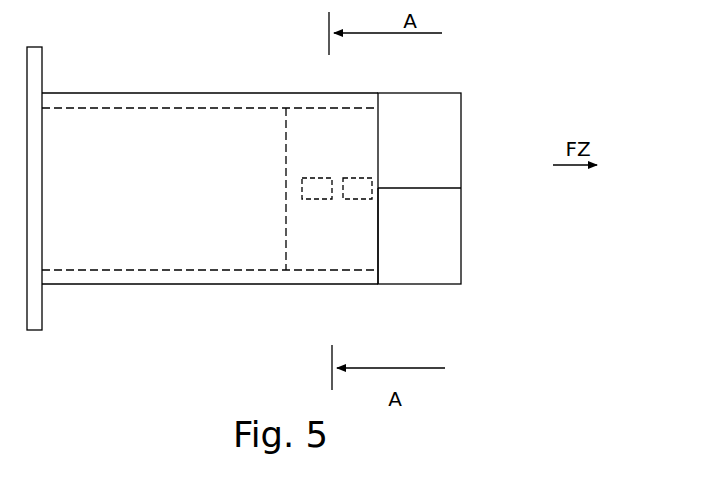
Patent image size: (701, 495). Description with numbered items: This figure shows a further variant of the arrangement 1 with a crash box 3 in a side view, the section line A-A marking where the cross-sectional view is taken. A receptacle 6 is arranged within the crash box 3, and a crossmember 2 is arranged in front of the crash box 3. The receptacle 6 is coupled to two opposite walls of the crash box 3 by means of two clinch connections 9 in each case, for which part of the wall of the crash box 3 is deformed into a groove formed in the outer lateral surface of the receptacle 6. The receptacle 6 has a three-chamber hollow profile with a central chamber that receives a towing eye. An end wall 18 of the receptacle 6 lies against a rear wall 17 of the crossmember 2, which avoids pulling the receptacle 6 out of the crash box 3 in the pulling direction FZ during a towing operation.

The vehicle trailer hitch / device 1 is at (566, 76).
The crossmember 2 is at (464, 165).
The crash box 3 is at (140, 93).
The receptacle 6 is at (294, 248).
The clinch connections 9 is at (357, 199).
The rear wall 17 is at (368, 238).
The end wall 18 is at (381, 123).